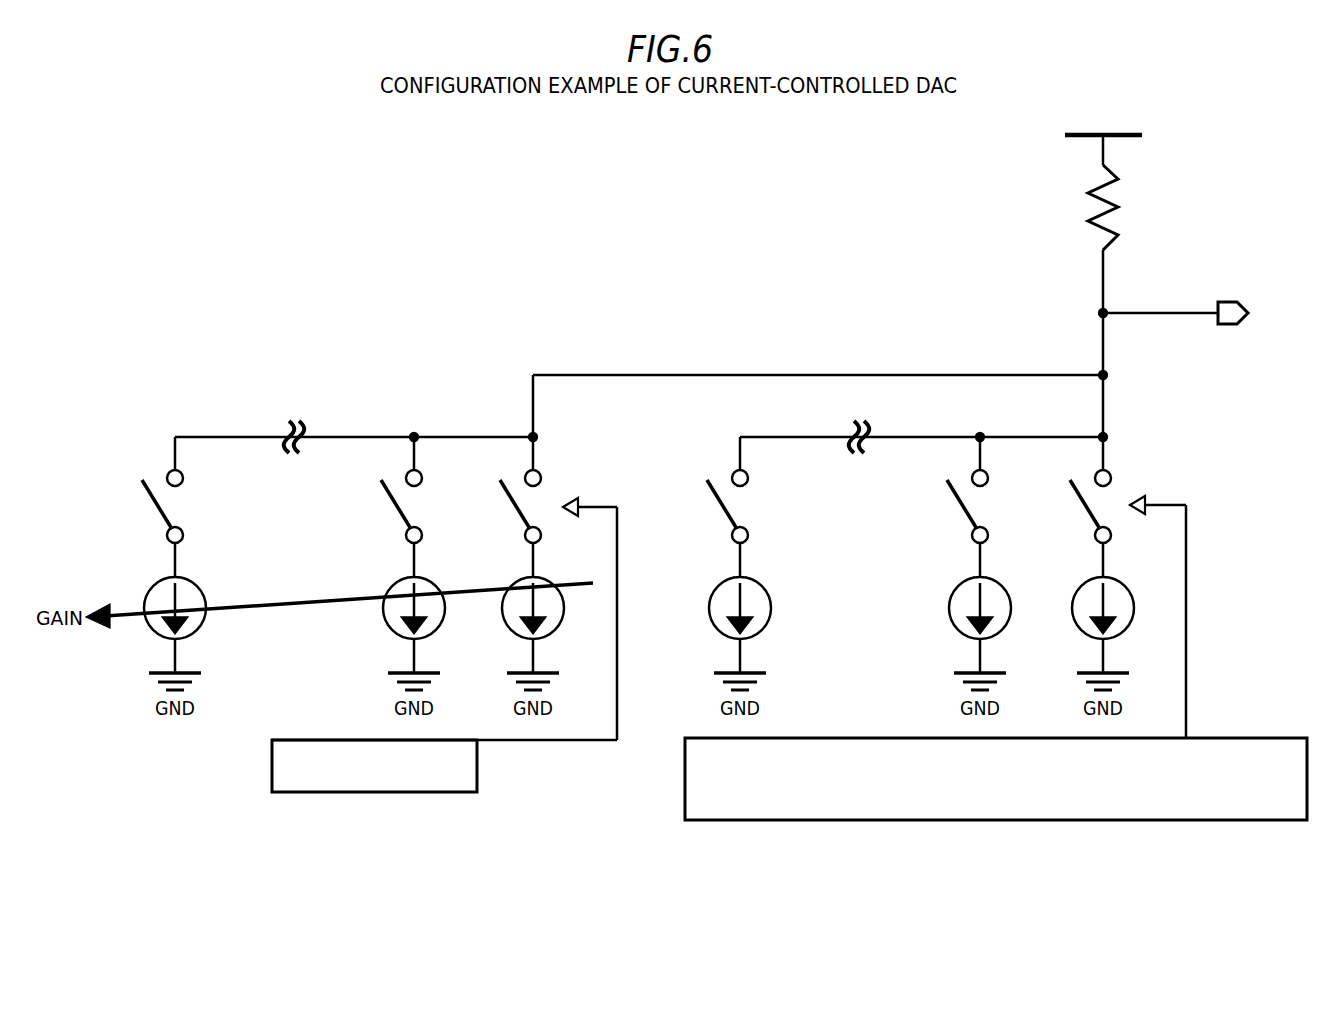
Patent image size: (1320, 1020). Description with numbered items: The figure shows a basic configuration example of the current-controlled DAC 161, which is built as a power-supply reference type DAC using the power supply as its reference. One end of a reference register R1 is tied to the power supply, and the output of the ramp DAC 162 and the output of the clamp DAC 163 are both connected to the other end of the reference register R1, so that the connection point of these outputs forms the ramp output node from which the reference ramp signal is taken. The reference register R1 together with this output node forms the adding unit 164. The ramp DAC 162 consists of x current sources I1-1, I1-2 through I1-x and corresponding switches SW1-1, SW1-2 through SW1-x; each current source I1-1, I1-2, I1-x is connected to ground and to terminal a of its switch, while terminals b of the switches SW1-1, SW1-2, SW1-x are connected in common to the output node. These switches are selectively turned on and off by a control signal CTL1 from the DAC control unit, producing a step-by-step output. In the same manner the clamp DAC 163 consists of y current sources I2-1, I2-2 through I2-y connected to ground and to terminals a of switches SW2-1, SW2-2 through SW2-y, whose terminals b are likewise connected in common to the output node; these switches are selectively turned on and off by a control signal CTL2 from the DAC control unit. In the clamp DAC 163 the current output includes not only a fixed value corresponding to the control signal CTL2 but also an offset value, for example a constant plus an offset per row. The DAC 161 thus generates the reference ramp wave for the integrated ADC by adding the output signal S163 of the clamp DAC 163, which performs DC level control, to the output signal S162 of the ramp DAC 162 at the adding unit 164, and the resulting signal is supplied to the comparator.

The current-controlled DAC 161 is at (642, 190).
The ramp DAC 162 is at (361, 417).
The clamp DAC 163 is at (930, 405).
The adding unit 164 is at (1066, 177).
The reference register R1 is at (1116, 207).
The output signal of the ramp DAC S162 is at (622, 374).
The output signal of the clamp DAC S163 is at (1106, 405).
The switch SW1-x is at (148, 515).
The switch SW1-2 is at (406, 540).
The switch SW1-1 is at (505, 514).
The switch SW2-y is at (717, 511).
The switch SW2-2 is at (972, 540).
The switch SW2-1 is at (1079, 510).
The current source I1-x is at (150, 625).
The current source I1-2 is at (388, 617).
The current source I1-1 is at (503, 602).
The current source I2-y is at (714, 620).
The current source I2-2 is at (959, 622).
The current source I2-1 is at (1070, 606).
The control signal CTL1 is at (547, 742).
The control signal CTL2 is at (1189, 608).